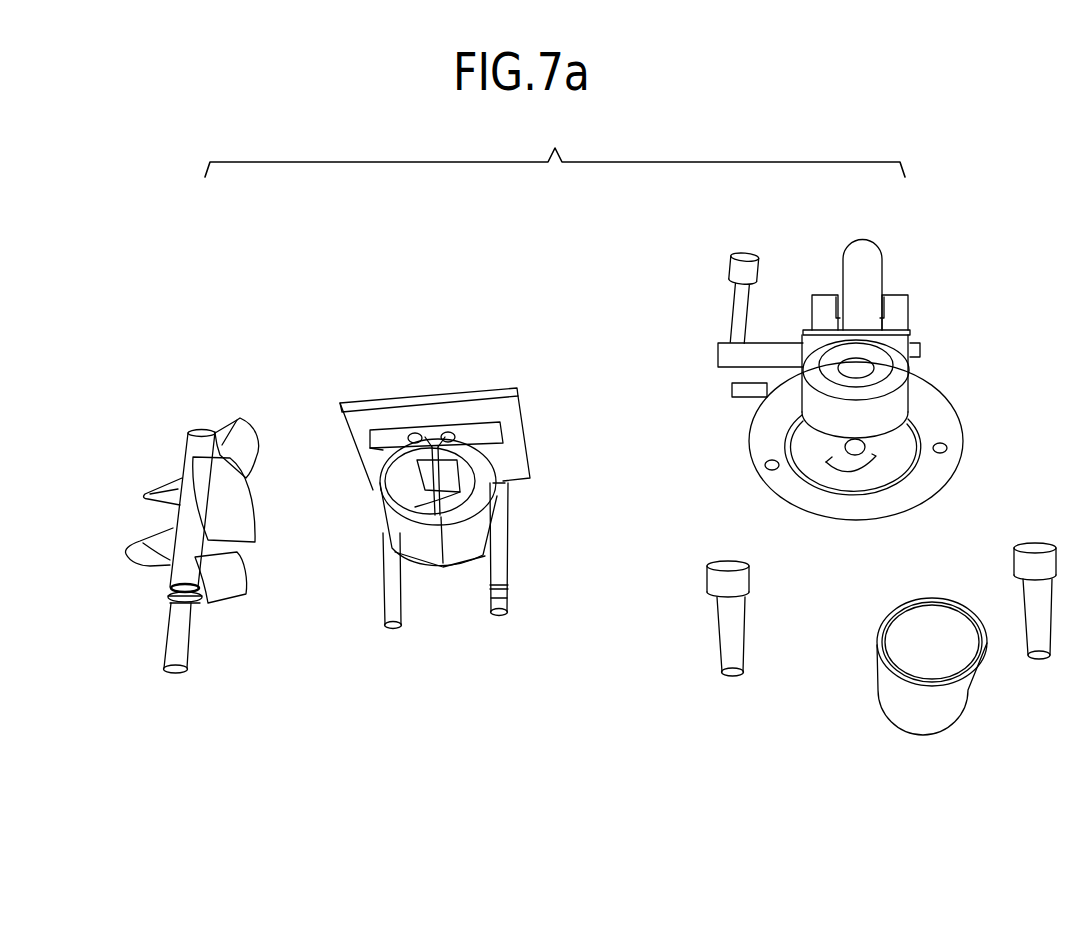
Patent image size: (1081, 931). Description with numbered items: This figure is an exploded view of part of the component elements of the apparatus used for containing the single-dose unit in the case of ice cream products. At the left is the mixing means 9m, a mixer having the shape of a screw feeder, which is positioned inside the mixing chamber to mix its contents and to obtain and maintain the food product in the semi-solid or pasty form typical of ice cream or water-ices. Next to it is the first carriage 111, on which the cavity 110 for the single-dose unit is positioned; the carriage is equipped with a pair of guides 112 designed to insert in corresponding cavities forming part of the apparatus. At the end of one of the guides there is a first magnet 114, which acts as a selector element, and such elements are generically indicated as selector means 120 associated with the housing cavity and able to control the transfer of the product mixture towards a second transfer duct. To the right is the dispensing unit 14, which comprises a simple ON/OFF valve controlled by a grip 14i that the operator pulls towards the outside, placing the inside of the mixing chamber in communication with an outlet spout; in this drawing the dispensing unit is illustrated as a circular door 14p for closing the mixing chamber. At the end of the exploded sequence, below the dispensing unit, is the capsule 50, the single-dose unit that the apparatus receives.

The mixing means 9m is at (167, 452).
The first carriage 111 is at (358, 393).
The cavity 110 is at (447, 494).
The guides 112 is at (502, 543).
The first magnet 114 is at (487, 586).
The selector means 120 is at (501, 600).
The dispensing unit 14 is at (933, 312).
The grip 14i is at (732, 313).
The circular door 14p is at (777, 507).
The capsule 50 is at (908, 740).